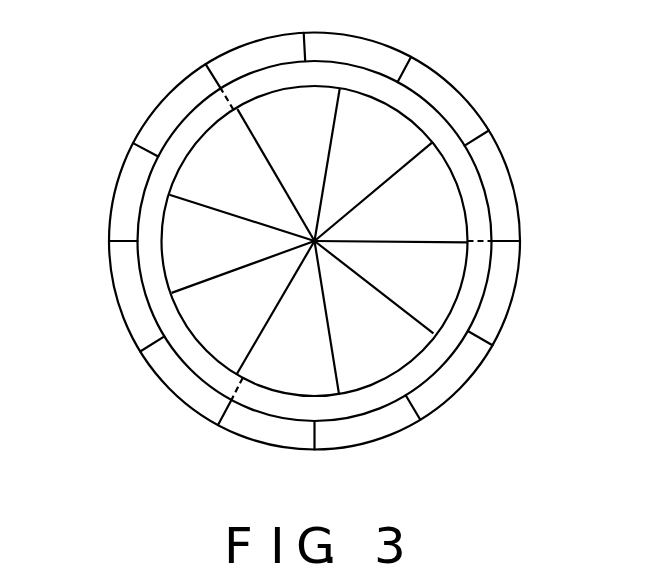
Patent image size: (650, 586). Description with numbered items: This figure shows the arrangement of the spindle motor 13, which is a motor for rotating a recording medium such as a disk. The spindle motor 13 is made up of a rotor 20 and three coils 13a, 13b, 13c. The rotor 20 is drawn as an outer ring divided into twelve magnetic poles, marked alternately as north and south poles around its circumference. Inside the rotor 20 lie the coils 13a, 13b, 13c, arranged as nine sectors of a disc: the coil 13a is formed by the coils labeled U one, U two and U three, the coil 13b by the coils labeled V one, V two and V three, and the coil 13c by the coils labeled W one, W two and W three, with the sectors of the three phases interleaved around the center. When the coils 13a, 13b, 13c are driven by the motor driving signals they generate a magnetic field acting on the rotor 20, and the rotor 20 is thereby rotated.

The spindle motor 13 is at (96, 92).
The coil 13a is at (231, 210).
The coil 13b is at (167, 235).
The coil 13c is at (249, 307).
The rotor 20 is at (486, 119).